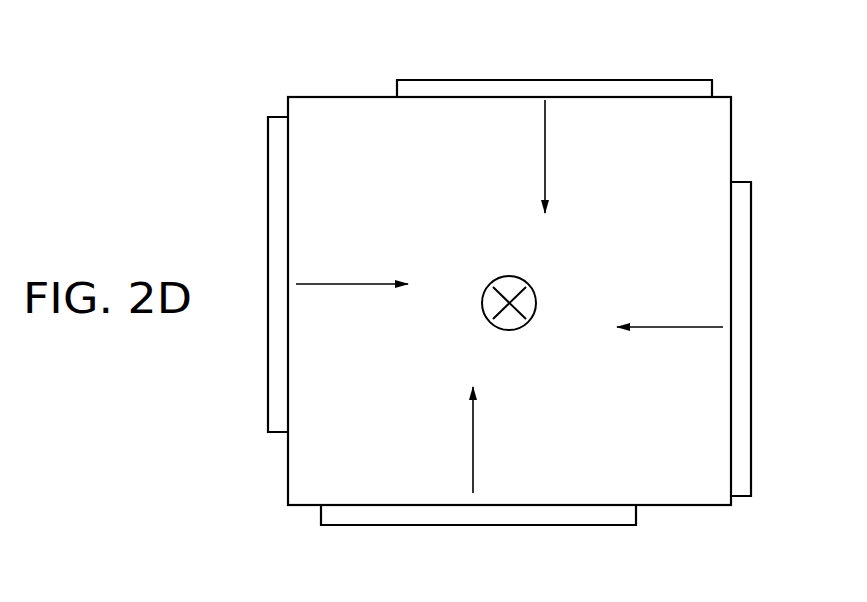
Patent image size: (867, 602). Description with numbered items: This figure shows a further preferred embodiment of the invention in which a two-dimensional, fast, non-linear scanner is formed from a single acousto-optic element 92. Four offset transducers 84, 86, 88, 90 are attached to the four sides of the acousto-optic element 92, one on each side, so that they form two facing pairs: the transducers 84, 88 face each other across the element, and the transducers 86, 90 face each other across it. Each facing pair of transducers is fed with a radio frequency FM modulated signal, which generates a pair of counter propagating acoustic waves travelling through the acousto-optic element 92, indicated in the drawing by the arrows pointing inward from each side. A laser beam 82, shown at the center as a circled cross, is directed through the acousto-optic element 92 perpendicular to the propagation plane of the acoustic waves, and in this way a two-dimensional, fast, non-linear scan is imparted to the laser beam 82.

The laser beam 82 is at (485, 310).
The offset transducer 84 is at (268, 142).
The offset transducer 86 is at (478, 80).
The offset transducer 88 is at (750, 393).
The offset transducer 90 is at (408, 525).
The acousto-optic element 92 is at (288, 483).